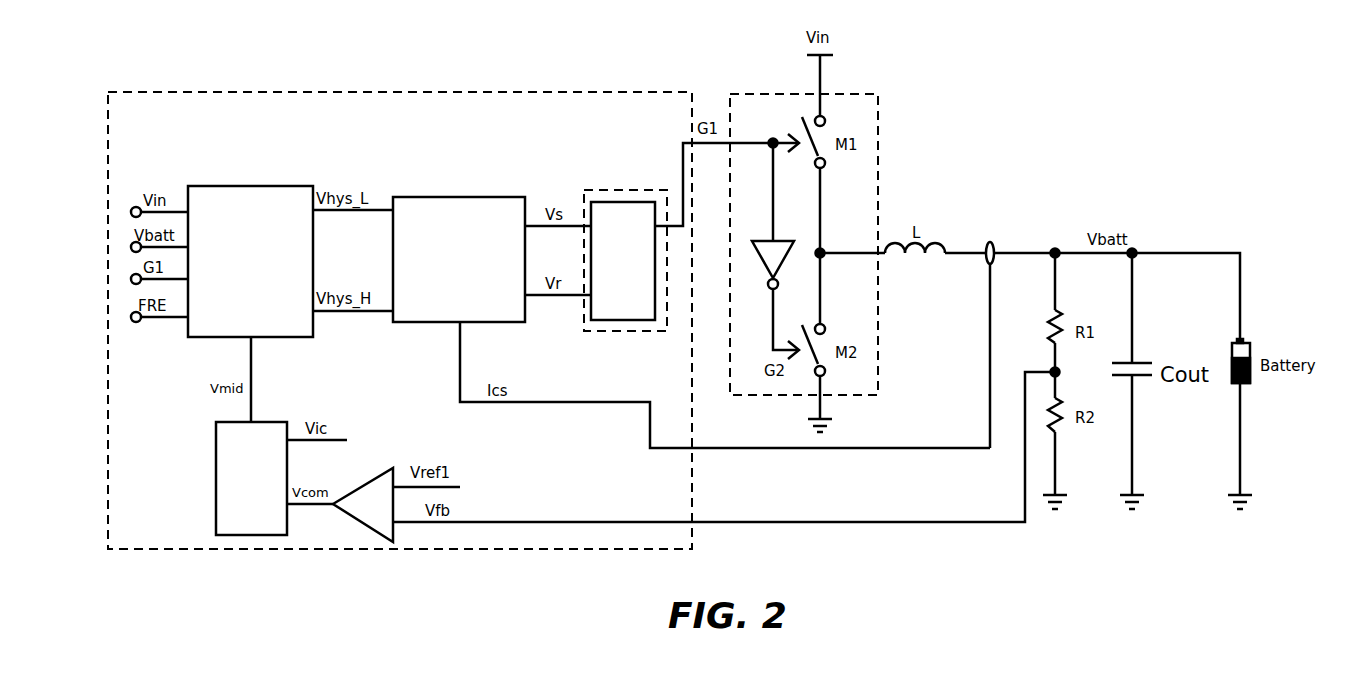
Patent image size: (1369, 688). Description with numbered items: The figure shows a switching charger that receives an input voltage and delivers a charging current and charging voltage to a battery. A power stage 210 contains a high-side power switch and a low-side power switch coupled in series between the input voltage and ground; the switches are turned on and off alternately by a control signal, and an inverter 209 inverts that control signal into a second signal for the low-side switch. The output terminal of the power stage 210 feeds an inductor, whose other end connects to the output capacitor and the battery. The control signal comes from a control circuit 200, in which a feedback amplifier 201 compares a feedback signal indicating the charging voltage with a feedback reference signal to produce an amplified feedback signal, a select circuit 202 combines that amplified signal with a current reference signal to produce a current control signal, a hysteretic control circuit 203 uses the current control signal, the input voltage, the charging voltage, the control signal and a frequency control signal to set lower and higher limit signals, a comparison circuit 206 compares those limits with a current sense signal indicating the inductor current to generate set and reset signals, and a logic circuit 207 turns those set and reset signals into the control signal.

The control circuit 200 is at (246, 92).
The feedback amplifier 201 is at (380, 468).
The select circuit 202 is at (267, 422).
The hysteretic control circuit 203 is at (233, 186).
The comparison circuit 206 is at (447, 197).
The logic circuit 207 is at (608, 190).
The inverter 209 is at (765, 266).
The power stage 210 is at (823, 243).